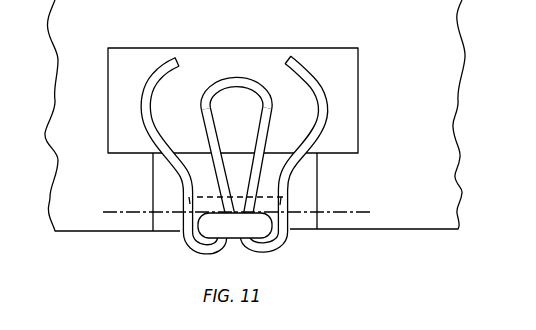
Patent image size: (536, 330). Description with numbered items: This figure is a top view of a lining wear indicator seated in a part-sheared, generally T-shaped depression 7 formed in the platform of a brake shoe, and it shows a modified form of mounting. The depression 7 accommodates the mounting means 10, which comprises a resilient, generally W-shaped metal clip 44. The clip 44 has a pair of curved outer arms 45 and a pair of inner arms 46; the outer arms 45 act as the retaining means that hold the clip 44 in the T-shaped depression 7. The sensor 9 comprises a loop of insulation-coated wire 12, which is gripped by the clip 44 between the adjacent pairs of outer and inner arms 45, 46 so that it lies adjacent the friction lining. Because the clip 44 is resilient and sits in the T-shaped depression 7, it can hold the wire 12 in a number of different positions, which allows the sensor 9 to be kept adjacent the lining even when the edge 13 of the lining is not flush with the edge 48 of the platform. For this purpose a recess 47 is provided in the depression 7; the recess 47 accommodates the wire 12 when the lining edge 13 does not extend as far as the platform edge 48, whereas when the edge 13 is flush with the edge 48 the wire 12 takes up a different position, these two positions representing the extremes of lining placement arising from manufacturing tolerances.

The depression 7 is at (354, 68).
The sensor 9 is at (258, 240).
The mounting means 10 is at (236, 73).
The insulation-coated wire 12 is at (213, 241).
The edge of the lining 13 is at (128, 212).
The metal clip 44 is at (303, 66).
The outer arms 45 is at (141, 108).
The inner arms 46 is at (203, 100).
The recess 47 is at (289, 221).
The edge of the platform 48 is at (125, 232).